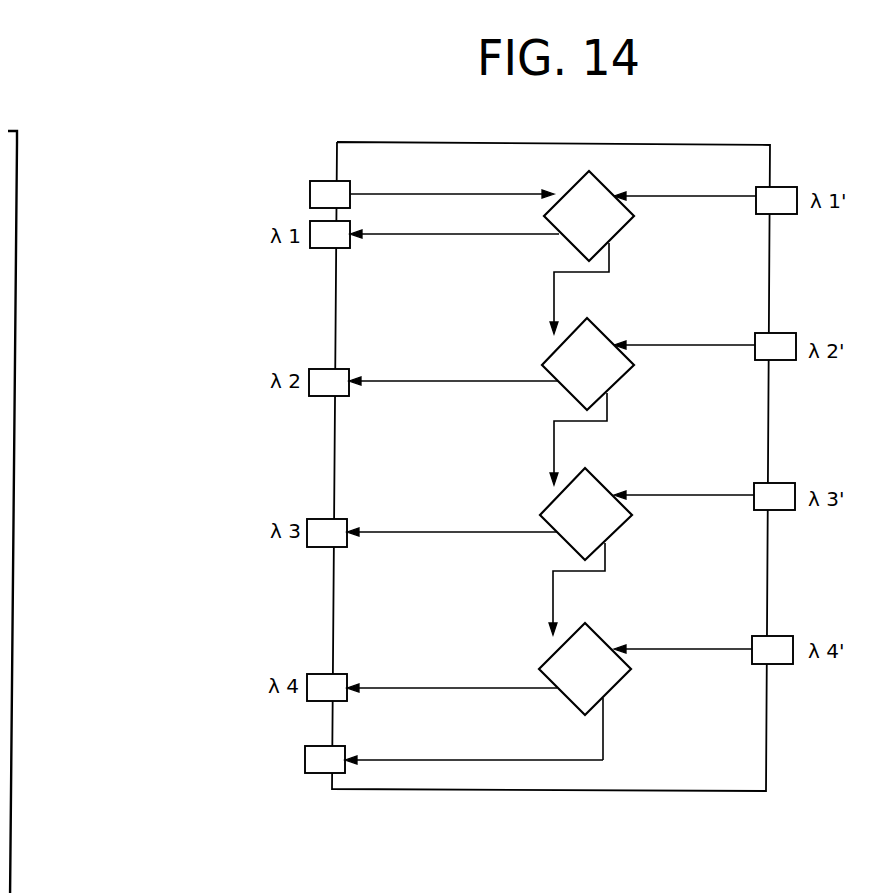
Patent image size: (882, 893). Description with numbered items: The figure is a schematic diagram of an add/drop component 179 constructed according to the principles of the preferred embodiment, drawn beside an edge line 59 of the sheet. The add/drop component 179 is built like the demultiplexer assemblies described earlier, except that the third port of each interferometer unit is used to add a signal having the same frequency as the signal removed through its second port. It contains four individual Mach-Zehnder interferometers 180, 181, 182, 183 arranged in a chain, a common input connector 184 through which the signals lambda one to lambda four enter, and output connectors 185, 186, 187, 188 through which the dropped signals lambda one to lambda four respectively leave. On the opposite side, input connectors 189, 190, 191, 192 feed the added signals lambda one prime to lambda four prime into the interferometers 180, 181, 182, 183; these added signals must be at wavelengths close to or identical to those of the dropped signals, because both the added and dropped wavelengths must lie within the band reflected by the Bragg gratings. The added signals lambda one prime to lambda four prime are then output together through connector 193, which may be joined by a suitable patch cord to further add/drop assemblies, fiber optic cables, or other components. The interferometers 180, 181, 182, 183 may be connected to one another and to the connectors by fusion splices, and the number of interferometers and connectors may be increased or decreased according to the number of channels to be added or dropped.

The optical fiber line 59 is at (16, 492).
The add/drop component 179 is at (712, 150).
The Mach-Zehnder interferometer 180 is at (603, 222).
The Mach-Zehnder interferometer 181 is at (603, 372).
The Mach-Zehnder interferometer 182 is at (600, 522).
The Mach-Zehnder interferometer 183 is at (600, 679).
The common input connector 184 is at (318, 183).
The output connector 185 is at (318, 232).
The output connector 186 is at (318, 380).
The output connector 187 is at (316, 530).
The output connector 188 is at (316, 678).
The input connector 189 is at (794, 209).
The input connector 190 is at (794, 356).
The input connector 191 is at (794, 506).
The input connector 192 is at (794, 666).
The output connector 193 is at (314, 752).